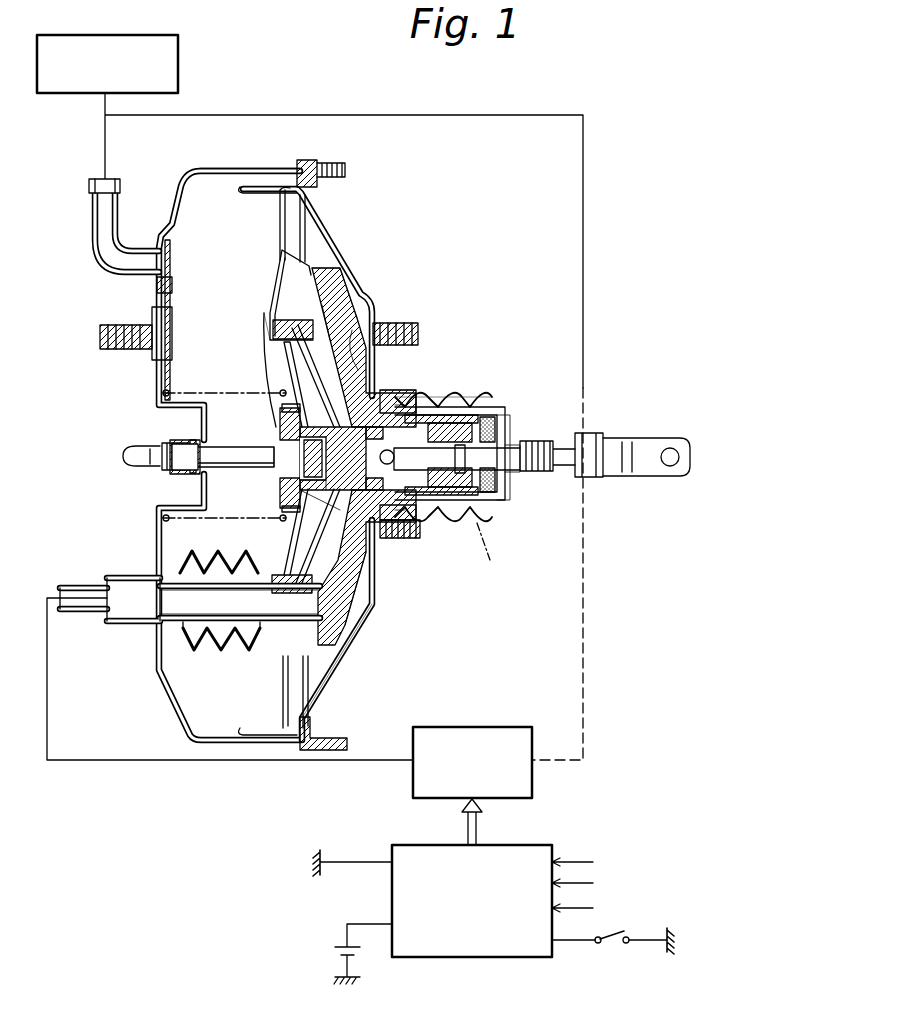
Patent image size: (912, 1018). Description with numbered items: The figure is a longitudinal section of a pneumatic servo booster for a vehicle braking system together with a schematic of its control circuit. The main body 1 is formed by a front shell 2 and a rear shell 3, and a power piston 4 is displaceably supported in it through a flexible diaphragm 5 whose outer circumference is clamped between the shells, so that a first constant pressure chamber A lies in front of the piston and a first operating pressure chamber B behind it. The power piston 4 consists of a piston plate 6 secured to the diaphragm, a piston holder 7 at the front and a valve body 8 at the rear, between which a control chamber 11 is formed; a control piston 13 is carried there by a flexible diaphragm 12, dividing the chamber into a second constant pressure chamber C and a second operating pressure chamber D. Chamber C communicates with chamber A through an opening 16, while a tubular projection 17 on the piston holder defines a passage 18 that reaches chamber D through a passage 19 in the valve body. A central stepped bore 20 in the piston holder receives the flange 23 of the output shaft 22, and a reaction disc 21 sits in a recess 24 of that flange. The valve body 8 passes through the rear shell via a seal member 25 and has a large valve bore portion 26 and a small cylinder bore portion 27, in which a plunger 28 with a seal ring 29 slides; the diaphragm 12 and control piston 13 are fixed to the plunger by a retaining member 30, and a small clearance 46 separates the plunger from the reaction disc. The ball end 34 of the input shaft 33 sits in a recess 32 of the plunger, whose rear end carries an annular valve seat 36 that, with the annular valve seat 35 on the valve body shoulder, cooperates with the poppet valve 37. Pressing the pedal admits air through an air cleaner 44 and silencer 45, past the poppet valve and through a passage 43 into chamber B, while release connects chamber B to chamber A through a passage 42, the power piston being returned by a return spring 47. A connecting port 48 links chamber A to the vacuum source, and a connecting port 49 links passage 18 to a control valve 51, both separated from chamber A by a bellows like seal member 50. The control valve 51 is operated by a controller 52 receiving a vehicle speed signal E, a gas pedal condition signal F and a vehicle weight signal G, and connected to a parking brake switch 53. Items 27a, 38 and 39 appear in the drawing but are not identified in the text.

The main body 1 is at (258, 155).
The front shell 2 is at (183, 192).
The rear shell 3 is at (337, 252).
The power piston 4 is at (267, 273).
The flexible diaphragm 5 is at (242, 188).
The piston plate 6 is at (293, 204).
The piston holder 7 is at (278, 323).
The valve body 8 is at (320, 277).
The control chamber 11 is at (306, 340).
The flexible diaphragm 12 is at (371, 574).
The control piston 13 is at (270, 546).
The opening 16 is at (295, 371).
The tubular projection 17 is at (197, 648).
The passage 18 is at (290, 612).
The passage 19 is at (350, 653).
The central stepped bore 20 is at (293, 442).
The reaction disc 21 is at (205, 484).
The output shaft 22 is at (190, 450).
The flange 23 is at (285, 411).
The recess 24 is at (292, 478).
The seal member 25 is at (402, 430).
The valve bore portion 26 is at (483, 517).
The cylinder bore portion 27 is at (414, 528).
The bearing flange 27a is at (387, 392).
The plunger 28 is at (293, 472).
The seal ring 29 is at (345, 326).
The retaining member 30 is at (300, 514).
The recess 32 is at (420, 523).
The input shaft 33 is at (513, 468).
The ball end 34 is at (425, 418).
The annular valve seat 35 is at (457, 398).
The annular valve seat 36 is at (480, 394).
The poppet valve 37 is at (410, 458).
The stop ring 38 is at (507, 471).
The center line 39 is at (496, 551).
The passage 42 is at (317, 310).
The passage 43 is at (380, 518).
The air cleaner 44 is at (510, 437).
The silencer 45 is at (493, 408).
The small clearance 46 is at (273, 462).
The return spring 47 is at (205, 388).
The connecting port 48 is at (92, 231).
The connecting port 49 is at (118, 622).
The bellows like seal member 50 is at (230, 650).
The control valve 51 is at (535, 730).
The controller 52 is at (527, 960).
The parking brake switch 53 is at (615, 947).
The first constant pressure chamber A is at (205, 243).
The first operating pressure chamber B is at (308, 251).
The second constant pressure chamber C is at (270, 312).
The second operating pressure chamber D is at (290, 318).
The vehicle speed signal E is at (582, 860).
The gas pedal condition signal F is at (581, 885).
The vehicle weight signal G is at (584, 912).